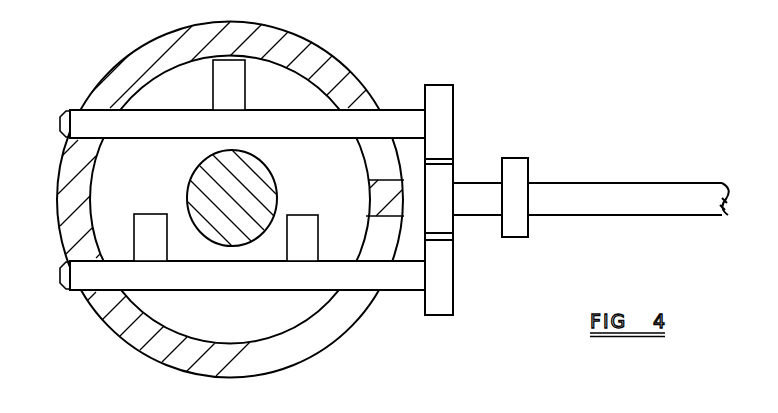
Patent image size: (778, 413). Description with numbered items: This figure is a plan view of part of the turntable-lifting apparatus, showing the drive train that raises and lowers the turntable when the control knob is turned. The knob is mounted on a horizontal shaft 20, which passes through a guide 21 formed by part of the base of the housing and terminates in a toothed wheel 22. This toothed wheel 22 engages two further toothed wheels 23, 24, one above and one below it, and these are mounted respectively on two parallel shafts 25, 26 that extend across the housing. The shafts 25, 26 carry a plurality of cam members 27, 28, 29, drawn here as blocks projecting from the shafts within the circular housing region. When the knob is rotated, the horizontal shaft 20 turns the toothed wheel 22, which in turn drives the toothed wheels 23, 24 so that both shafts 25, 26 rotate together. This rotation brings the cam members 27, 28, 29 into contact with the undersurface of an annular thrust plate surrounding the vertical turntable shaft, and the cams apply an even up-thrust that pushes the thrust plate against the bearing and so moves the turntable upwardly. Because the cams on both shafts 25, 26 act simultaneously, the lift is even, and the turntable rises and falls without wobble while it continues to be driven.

The horizontal shaft 20 is at (591, 199).
The guide 21 is at (518, 170).
The toothed wheel 22 is at (445, 178).
The toothed wheel 23 is at (445, 115).
The toothed wheel 24 is at (445, 252).
The shaft 25 is at (242, 124).
The shaft 26 is at (242, 275).
The cam member 27 is at (245, 82).
The cam member 28 is at (143, 229).
The cam member 29 is at (310, 250).